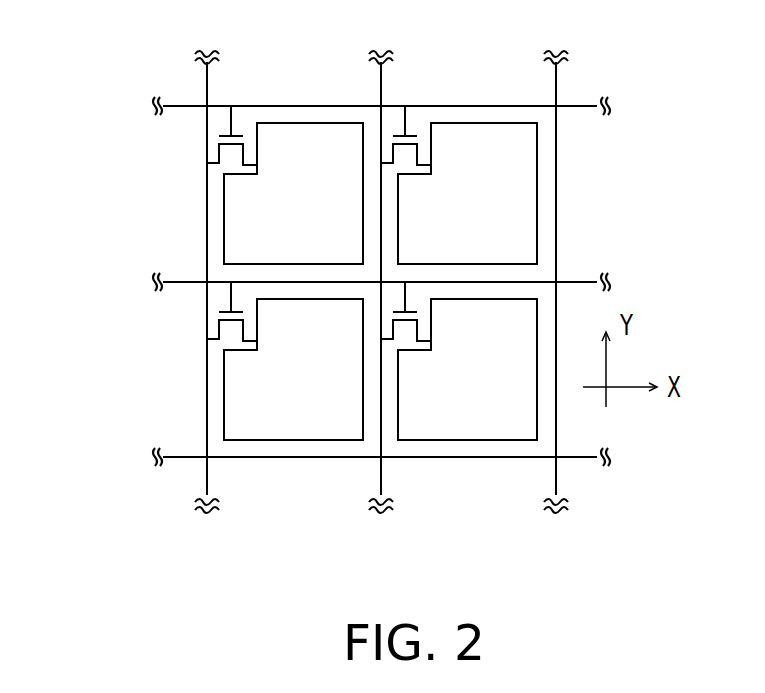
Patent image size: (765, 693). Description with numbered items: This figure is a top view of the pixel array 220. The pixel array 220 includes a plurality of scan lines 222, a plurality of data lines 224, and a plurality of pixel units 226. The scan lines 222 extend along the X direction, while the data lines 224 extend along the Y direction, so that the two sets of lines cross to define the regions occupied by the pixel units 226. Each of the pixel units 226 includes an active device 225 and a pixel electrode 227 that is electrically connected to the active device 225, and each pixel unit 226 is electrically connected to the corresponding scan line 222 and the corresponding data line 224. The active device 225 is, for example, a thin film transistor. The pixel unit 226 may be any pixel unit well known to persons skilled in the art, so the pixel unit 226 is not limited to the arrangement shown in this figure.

The pixel array 220 is at (680, 580).
The scan lines 222 is at (186, 105).
The data lines 224 is at (207, 91).
The active device 225 is at (218, 163).
The pixel units 226 is at (95, 145).
The pixel electrode 227 is at (224, 192).